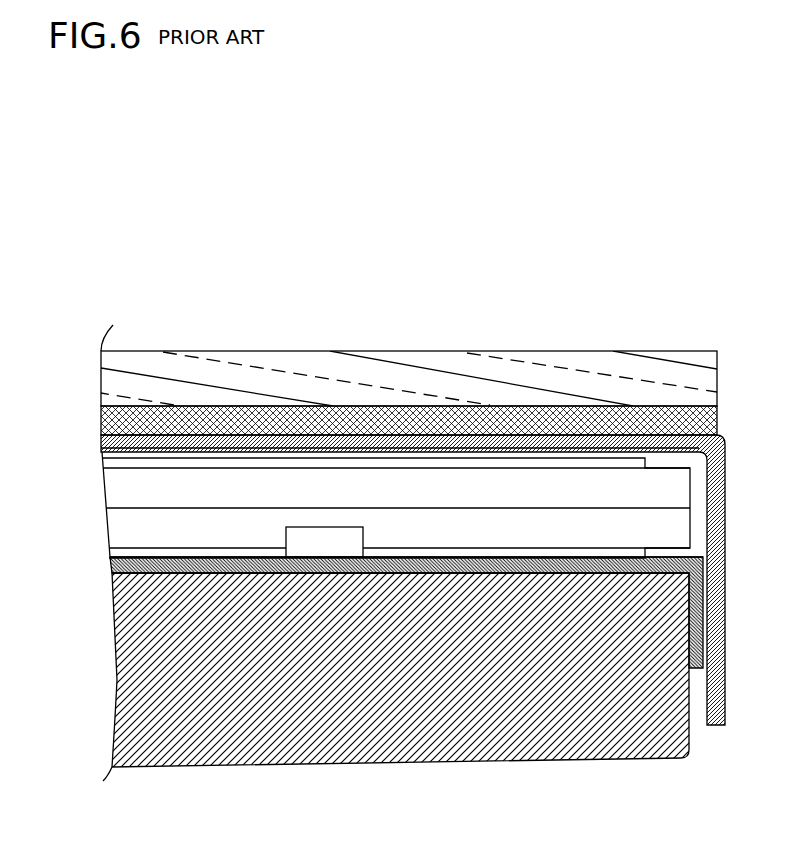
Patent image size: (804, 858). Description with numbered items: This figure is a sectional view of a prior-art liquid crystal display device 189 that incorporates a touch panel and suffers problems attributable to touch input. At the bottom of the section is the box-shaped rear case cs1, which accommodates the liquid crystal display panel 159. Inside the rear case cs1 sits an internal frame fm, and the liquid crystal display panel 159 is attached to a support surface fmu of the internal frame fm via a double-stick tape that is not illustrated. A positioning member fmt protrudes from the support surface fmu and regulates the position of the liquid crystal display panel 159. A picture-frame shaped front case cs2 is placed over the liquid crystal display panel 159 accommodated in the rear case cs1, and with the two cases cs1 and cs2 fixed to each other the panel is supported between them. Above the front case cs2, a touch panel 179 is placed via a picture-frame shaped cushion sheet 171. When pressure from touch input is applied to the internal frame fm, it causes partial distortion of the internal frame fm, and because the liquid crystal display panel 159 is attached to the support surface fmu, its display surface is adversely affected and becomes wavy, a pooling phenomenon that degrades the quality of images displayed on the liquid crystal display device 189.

The liquid crystal display device 189 is at (166, 290).
The touch panel 179 is at (113, 385).
The cushion sheet 171 is at (101, 411).
The front case cs2 is at (101, 440).
The liquid crystal display panel 159 is at (98, 450).
The positioning member fmt is at (324, 542).
The support surface fmu is at (110, 557).
The internal frame fm is at (112, 572).
The rear case cs1 is at (130, 679).